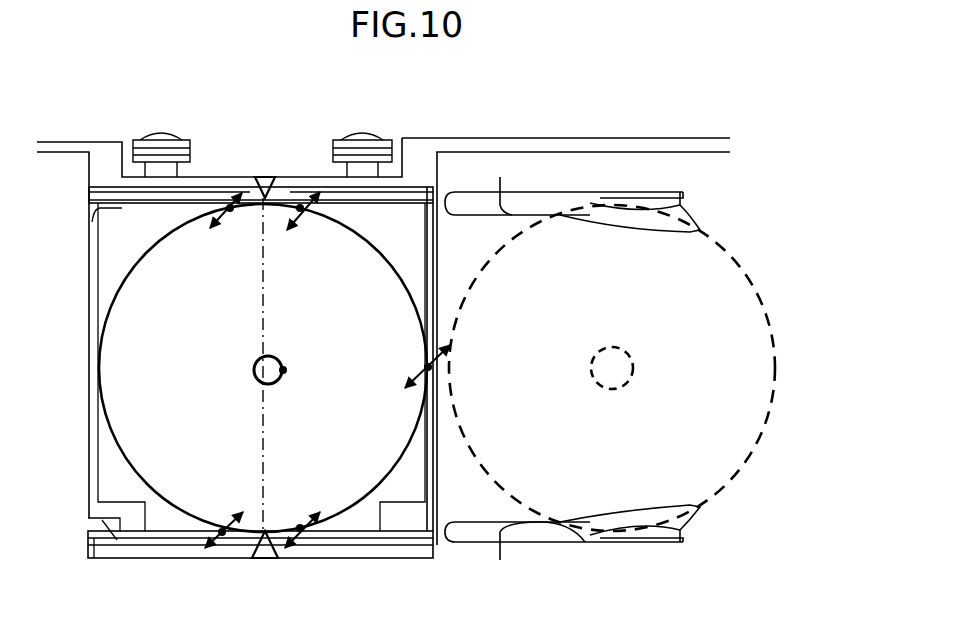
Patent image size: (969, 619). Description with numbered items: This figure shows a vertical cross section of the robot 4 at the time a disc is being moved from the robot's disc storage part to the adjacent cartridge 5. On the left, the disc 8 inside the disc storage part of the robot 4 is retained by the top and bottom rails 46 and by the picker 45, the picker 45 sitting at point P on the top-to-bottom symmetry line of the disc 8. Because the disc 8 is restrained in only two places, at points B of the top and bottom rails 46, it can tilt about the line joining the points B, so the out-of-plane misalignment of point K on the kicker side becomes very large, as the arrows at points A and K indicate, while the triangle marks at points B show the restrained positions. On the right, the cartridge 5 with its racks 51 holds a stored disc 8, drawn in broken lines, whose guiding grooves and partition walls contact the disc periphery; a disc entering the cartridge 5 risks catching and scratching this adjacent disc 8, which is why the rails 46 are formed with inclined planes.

The robot 4 is at (268, 122).
The cartridge 5 is at (603, 113).
The disc 8 is at (130, 318).
The picker 45 is at (258, 377).
The rails 46 is at (88, 237).
The racks 51 is at (683, 192).